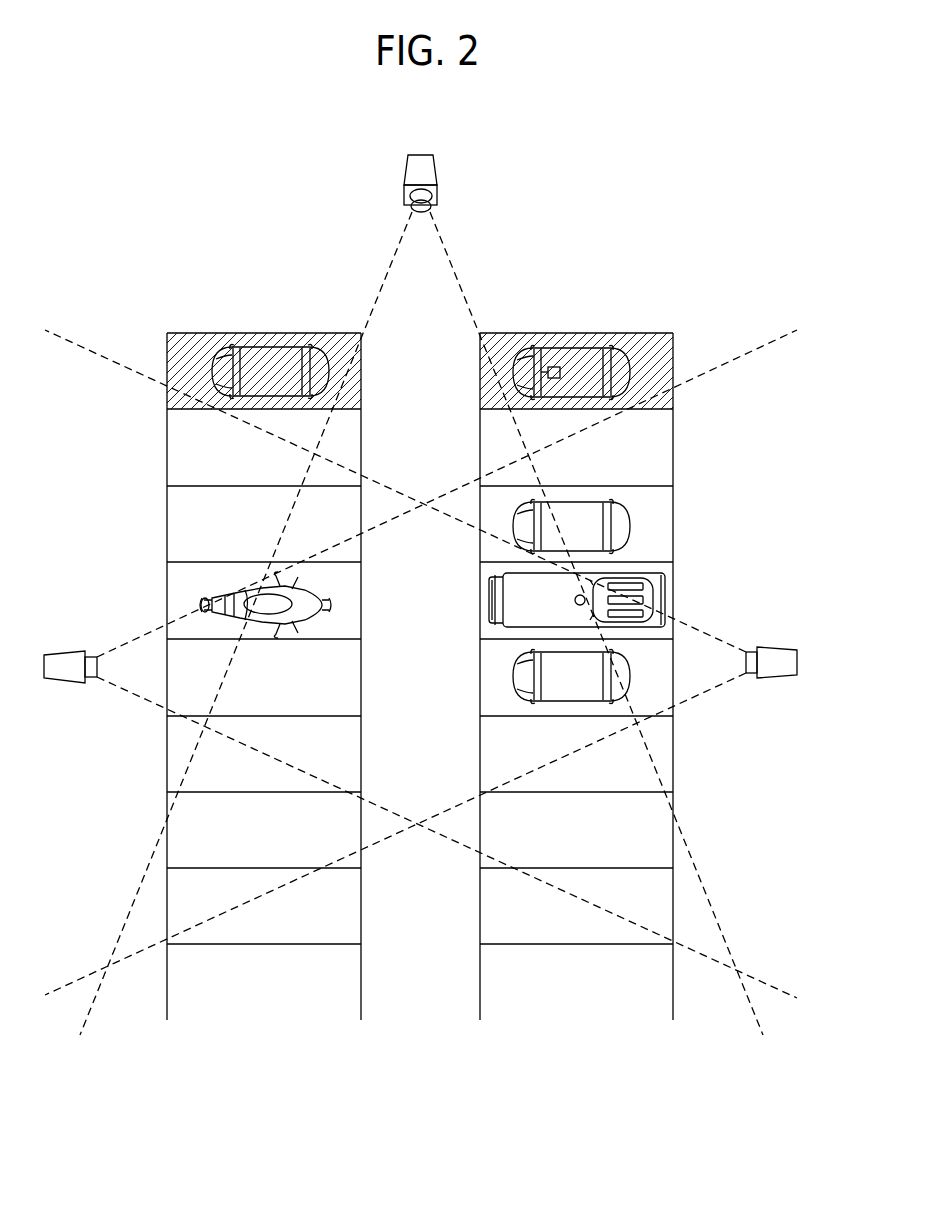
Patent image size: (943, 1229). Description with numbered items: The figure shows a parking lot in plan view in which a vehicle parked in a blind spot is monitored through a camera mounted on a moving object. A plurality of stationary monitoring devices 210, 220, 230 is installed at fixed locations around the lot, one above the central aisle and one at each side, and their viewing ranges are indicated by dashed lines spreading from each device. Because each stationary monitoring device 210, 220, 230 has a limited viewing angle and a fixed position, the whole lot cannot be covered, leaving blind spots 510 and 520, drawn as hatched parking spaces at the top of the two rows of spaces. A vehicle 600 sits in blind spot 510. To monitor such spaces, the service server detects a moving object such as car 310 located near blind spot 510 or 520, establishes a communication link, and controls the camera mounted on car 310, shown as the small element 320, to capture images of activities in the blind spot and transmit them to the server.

The stationary monitoring device 210 is at (422, 158).
The stationary monitoring device 220 is at (66, 652).
The stationary monitoring device 230 is at (779, 648).
The car 310 is at (618, 356).
The terminal / identification device on vehicle 320 is at (550, 367).
The blind spot 510 is at (176, 368).
The blind spot 520 is at (666, 368).
The vehicle 600 is at (266, 356).